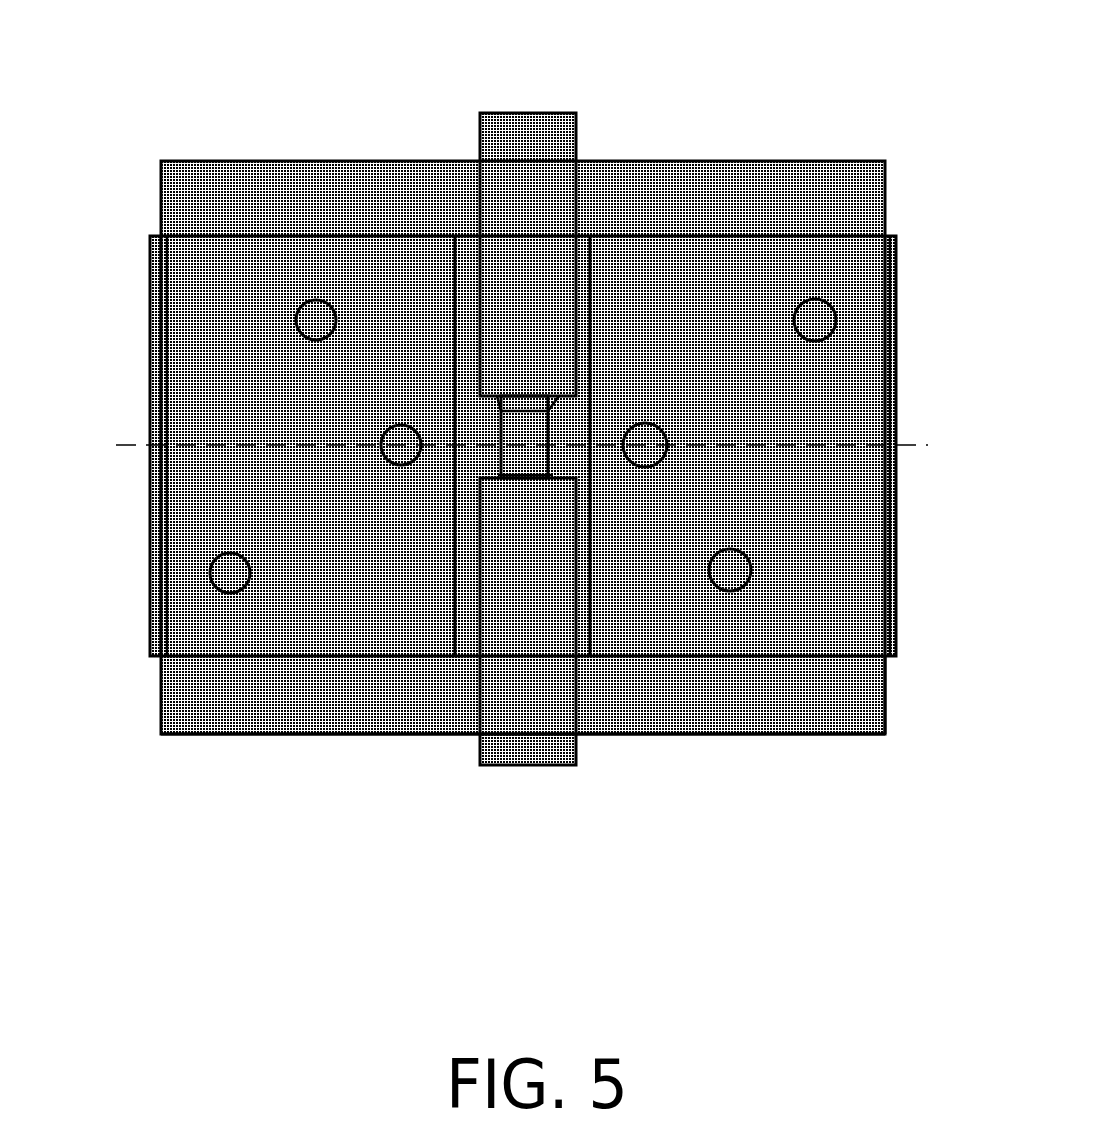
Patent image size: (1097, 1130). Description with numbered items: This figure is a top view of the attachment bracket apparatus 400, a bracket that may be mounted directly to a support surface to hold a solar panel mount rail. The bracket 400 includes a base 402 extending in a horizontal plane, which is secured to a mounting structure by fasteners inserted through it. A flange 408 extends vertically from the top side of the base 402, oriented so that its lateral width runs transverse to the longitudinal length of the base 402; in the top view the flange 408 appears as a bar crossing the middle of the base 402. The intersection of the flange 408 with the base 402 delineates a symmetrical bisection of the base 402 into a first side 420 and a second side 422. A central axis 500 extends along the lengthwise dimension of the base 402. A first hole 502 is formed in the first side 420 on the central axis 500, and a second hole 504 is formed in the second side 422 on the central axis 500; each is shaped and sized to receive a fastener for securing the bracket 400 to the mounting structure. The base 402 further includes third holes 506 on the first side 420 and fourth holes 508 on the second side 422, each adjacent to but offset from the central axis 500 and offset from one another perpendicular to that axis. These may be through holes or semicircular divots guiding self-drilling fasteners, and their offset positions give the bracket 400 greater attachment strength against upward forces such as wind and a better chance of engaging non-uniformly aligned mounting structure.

The attachment bracket apparatus 400 is at (470, 451).
The base 402 is at (454, 446).
The flange 408 is at (529, 670).
The first side 420 is at (188, 215).
The second side 422 is at (743, 665).
The central axis 500 is at (185, 437).
The first hole 502 is at (395, 458).
The second hole 504 is at (638, 418).
The third holes 506 is at (305, 300).
The fourth holes 508 is at (811, 300).